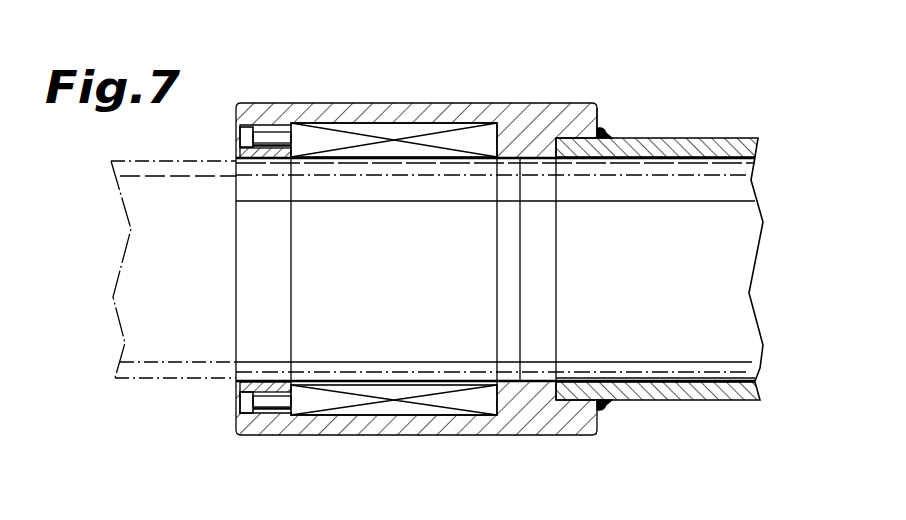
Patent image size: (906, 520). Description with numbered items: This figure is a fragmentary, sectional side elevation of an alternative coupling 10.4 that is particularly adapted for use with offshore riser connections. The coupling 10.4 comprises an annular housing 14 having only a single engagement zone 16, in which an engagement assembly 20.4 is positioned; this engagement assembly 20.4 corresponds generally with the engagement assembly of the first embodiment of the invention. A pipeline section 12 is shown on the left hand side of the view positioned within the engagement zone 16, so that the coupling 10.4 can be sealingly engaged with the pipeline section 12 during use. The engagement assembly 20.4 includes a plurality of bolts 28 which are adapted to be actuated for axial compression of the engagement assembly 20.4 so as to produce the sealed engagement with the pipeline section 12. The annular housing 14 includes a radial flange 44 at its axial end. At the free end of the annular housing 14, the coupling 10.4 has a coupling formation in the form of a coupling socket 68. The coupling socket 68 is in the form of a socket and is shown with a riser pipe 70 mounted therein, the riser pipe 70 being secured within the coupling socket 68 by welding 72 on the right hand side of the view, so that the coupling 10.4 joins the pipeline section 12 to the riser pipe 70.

The coupling 10.4 is at (537, 92).
The pipeline section 12 is at (208, 370).
The annular housing 14 is at (500, 439).
The engagement zone 16 is at (332, 111).
The engagement assembly 20.4 is at (403, 123).
The bolt 28 is at (264, 414).
The radial flange 44 is at (283, 397).
The coupling socket 68 is at (583, 118).
The riser pipe 70 is at (701, 133).
The welding 72 is at (608, 134).